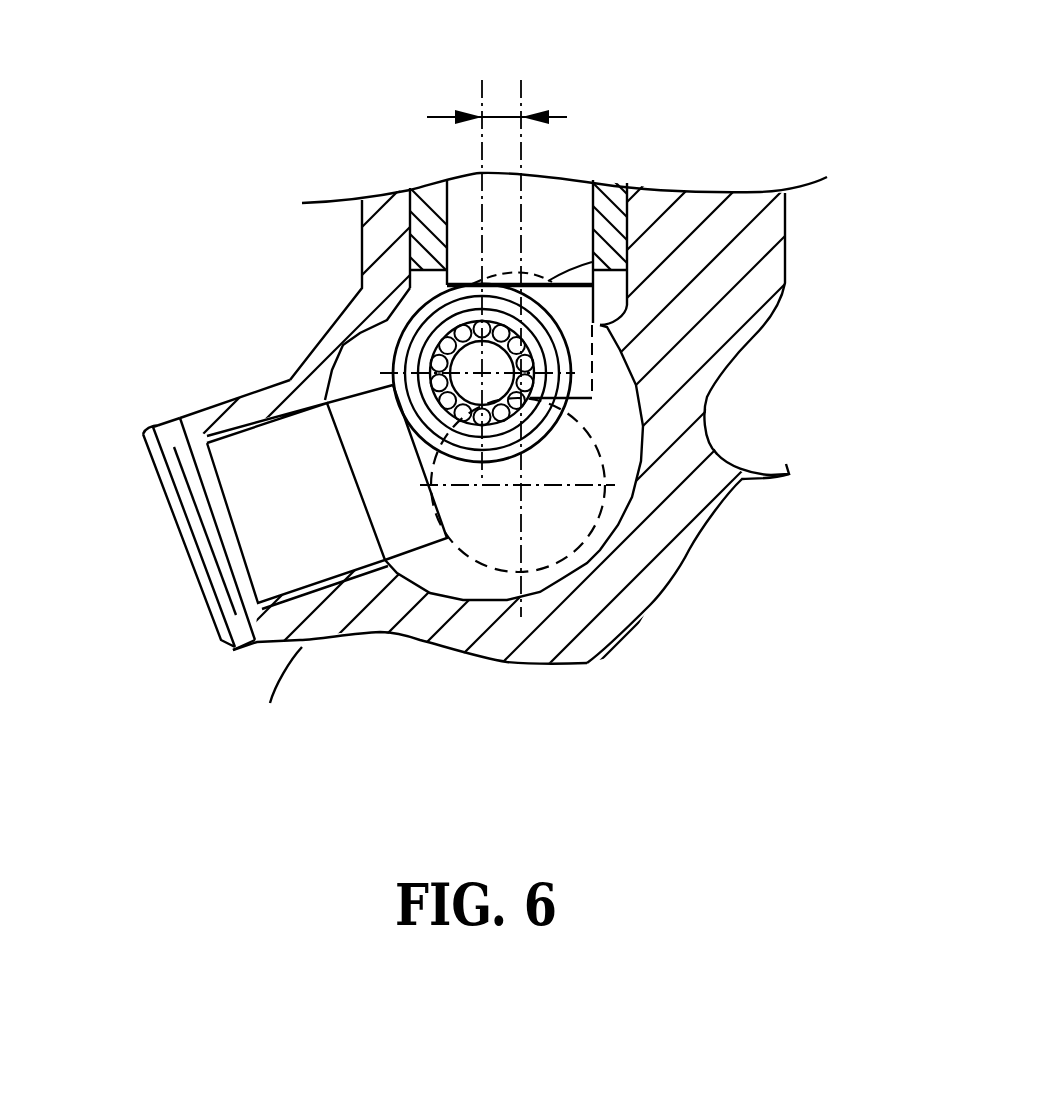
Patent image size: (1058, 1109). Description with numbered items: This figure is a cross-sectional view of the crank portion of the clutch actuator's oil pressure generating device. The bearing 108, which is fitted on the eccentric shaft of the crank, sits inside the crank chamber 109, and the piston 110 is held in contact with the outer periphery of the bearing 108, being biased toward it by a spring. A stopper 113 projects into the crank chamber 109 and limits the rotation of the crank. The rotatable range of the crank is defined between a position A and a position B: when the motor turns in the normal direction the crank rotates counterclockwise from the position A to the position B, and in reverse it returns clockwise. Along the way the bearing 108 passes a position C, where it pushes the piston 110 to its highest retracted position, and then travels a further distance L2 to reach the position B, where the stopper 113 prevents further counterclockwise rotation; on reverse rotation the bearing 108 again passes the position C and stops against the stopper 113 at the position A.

The bearing 108 is at (412, 290).
The piston 110 is at (553, 225).
The stopper 113 is at (333, 403).
The crank chamber 109 is at (616, 402).
The position A is at (613, 537).
The position B is at (398, 352).
The position C is at (636, 253).
The distance L2 is at (500, 117).